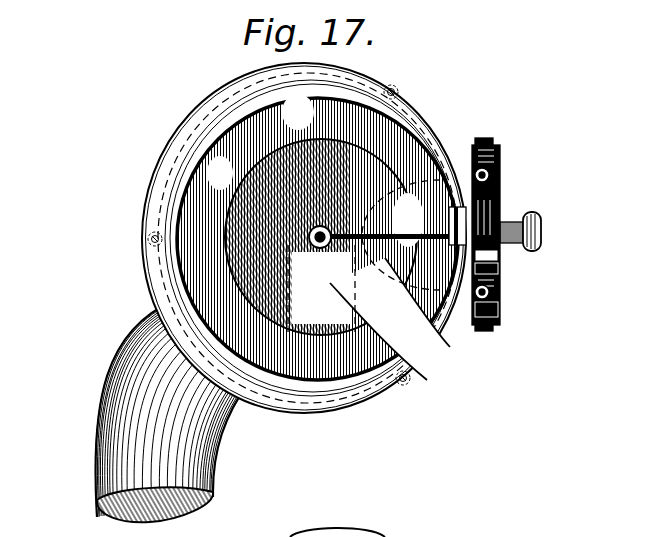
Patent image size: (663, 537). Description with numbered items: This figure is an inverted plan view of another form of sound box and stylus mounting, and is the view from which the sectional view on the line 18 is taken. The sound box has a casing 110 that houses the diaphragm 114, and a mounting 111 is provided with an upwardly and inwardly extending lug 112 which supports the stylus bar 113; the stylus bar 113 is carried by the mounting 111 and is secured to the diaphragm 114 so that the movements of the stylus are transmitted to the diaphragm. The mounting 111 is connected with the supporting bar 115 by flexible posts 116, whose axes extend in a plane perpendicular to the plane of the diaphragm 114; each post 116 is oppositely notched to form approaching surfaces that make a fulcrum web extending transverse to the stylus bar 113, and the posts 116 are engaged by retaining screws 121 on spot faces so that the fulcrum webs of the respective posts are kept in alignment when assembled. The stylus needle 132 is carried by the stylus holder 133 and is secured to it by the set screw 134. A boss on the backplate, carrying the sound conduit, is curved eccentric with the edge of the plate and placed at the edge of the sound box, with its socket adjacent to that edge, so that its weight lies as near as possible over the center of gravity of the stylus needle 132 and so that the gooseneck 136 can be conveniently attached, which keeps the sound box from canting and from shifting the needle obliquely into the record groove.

The section line 18 is at (138, 242).
The sound box casing 110 is at (145, 227).
The mounting 111 is at (502, 310).
The lug 112 is at (502, 267).
The stylus bar 113 is at (450, 347).
The diaphragm 114 is at (427, 380).
The supporting bar 115 is at (500, 152).
The flexible posts 116 is at (500, 175).
The retaining screws 121 is at (483, 139).
The stylus needle 132 is at (541, 223).
The stylus holder 133 is at (502, 257).
The set screw 134 is at (543, 232).
The gooseneck 136 is at (142, 405).